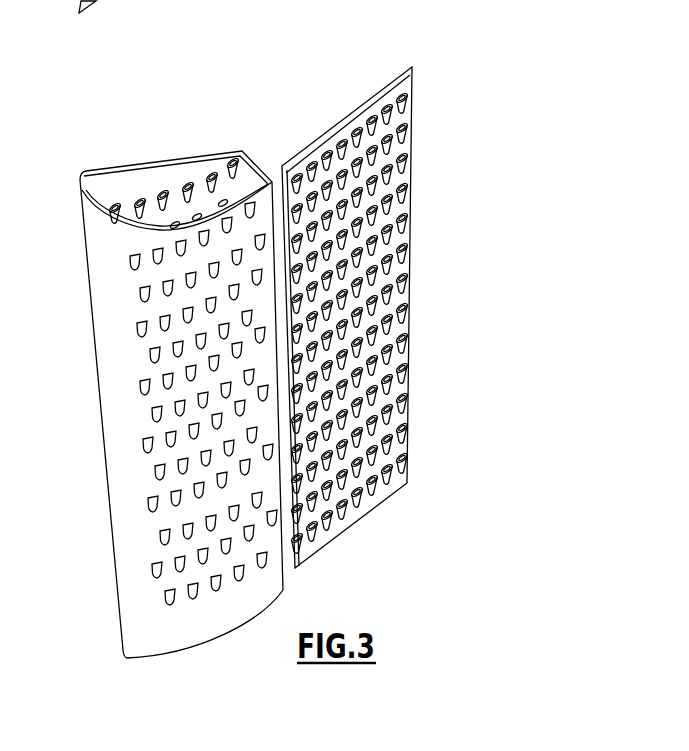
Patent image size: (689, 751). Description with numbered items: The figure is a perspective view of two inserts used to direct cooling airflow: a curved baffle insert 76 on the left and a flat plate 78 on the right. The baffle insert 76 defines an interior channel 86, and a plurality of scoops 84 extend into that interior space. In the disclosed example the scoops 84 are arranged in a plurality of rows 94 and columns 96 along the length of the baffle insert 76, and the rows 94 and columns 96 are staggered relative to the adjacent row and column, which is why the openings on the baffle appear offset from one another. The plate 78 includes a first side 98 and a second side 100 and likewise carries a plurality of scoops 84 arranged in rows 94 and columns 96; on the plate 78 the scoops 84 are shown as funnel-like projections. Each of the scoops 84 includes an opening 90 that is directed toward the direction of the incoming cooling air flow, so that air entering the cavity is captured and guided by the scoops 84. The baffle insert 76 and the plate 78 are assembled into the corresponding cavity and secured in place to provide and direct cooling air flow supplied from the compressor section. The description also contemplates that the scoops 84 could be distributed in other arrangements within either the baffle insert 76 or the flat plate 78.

The baffle insert 76 is at (188, 182).
The flat plate 78 is at (354, 118).
The scoops 84 is at (163, 193).
The interior channel 86 is at (177, 208).
The opening 90 is at (213, 173).
The rows 94 is at (140, 326).
The columns 96 is at (216, 582).
The first side 98 is at (405, 112).
The second side 100 is at (405, 62).